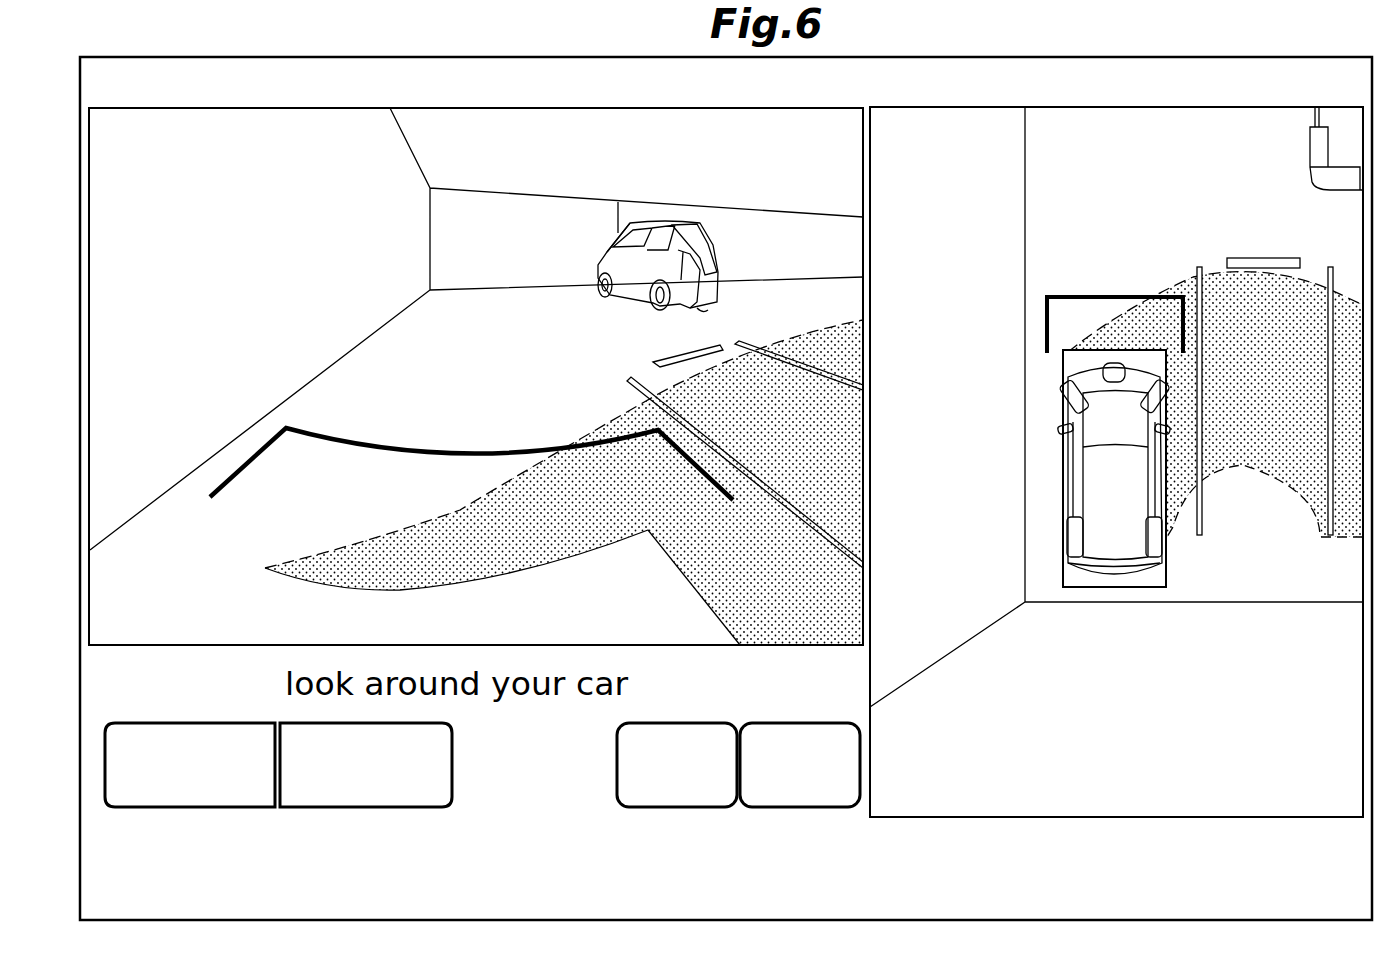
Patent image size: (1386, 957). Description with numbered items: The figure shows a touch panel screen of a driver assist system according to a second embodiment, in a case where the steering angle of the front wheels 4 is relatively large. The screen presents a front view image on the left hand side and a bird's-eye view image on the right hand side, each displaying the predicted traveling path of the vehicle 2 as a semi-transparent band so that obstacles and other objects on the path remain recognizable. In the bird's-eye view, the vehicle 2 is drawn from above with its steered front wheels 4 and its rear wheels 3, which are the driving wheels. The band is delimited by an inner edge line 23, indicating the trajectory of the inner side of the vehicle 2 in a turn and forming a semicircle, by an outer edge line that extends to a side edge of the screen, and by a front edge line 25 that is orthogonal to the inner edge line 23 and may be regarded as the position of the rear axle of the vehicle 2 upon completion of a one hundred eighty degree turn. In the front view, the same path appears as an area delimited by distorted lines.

The vehicle 2 is at (1073, 502).
The rear wheels 3 is at (1070, 537).
The front wheels 4 is at (1060, 403).
The inner edge line 23 is at (1243, 467).
The front edge line 25 is at (1353, 537).